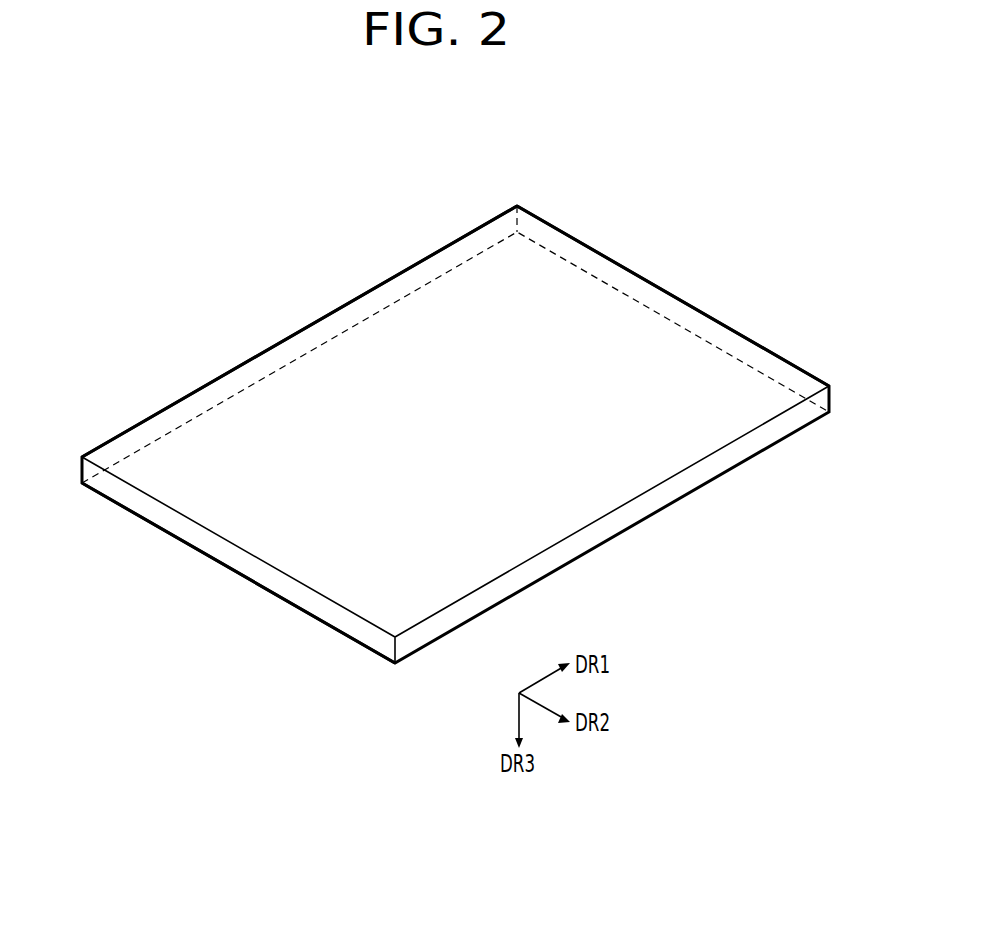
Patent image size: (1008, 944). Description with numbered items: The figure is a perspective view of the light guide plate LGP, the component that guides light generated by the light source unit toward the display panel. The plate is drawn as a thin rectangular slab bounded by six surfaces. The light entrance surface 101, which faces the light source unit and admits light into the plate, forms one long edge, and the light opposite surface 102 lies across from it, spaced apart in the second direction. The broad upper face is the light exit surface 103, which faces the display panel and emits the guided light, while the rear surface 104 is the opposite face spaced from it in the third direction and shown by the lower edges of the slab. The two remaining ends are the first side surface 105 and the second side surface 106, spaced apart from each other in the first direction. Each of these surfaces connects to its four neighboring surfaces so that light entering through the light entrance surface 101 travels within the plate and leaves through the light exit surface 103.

The light guide plate LGP is at (686, 213).
The light entrance surface 101 is at (270, 362).
The light opposite surface 102 is at (612, 527).
The light exit surface 103 is at (402, 327).
The rear surface 104 is at (297, 608).
The first side surface 105 is at (223, 552).
The second side surface 106 is at (723, 340).